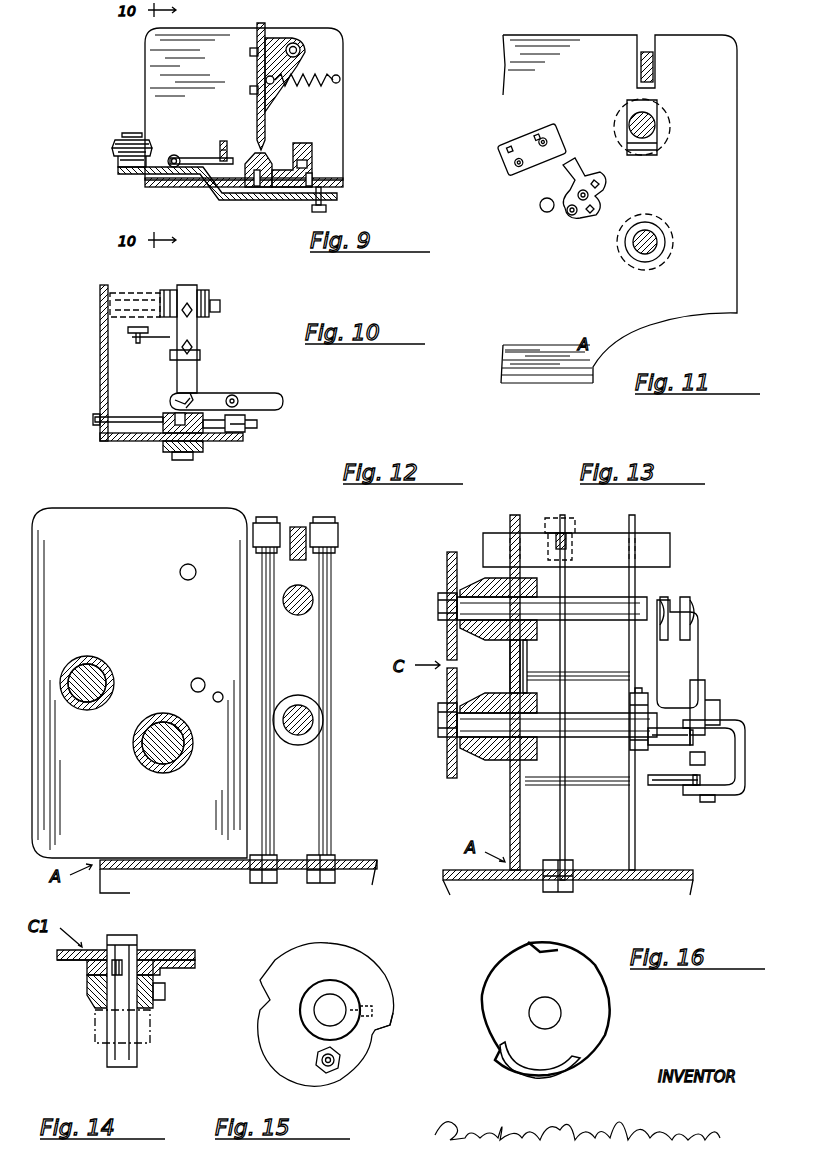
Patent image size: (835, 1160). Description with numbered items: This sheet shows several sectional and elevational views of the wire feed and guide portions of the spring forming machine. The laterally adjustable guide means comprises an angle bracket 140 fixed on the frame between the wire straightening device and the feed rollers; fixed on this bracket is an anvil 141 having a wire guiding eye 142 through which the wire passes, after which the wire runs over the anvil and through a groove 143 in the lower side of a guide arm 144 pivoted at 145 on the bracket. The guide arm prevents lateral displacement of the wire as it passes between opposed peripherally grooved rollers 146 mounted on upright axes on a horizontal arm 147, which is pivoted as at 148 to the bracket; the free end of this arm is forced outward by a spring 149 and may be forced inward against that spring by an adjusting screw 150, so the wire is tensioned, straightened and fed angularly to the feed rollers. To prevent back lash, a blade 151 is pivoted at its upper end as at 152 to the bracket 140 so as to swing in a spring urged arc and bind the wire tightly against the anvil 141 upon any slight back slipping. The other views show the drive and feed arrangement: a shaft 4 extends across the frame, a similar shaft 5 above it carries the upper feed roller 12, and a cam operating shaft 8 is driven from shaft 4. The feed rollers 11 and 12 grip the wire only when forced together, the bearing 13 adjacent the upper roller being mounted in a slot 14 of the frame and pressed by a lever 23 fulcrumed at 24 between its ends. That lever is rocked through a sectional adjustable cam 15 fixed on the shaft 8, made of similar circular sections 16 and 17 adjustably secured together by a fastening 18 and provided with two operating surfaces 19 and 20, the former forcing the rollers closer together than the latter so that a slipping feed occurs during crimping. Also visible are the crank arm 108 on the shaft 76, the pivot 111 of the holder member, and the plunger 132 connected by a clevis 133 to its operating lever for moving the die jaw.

In FIG. 11, the shaft 4 is at (633, 250).
In FIG. 12, the shaft 4 is at (297, 737).
In FIG. 13, the shaft 4 is at (610, 740).
In FIG. 11, the shaft 5 is at (630, 118).
In FIG. 12, the shaft 5 is at (298, 615).
In FIG. 13, the shaft 5 is at (650, 600).
In FIG. 14, the cam operating shaft 8 is at (107, 1050).
In FIG. 13, the feed roller 11 is at (447, 758).
In FIG. 13, the feed roller 12 is at (447, 576).
In FIG. 11, the bearing 13 is at (655, 102).
In FIG. 13, the bearing 13 is at (485, 585).
In FIG. 11, the slot 14 is at (665, 142).
In FIG. 13, the slot 14 is at (512, 645).
In FIG. 14, the sectional adjustable cam 15 is at (191, 958).
In FIG. 14, the circular section 16 is at (82, 975).
In FIG. 15, the circular section 16 is at (360, 975).
In FIG. 14, the circular section 17 is at (140, 950).
In FIG. 16, the circular section 17 is at (592, 1007).
In FIG. 15, the fastening 18 is at (338, 1068).
In FIG. 16, the fastening 18 is at (578, 1063).
In FIG. 15, the operating surface 19 is at (255, 1045).
In FIG. 16, the operating surface 19 is at (473, 973).
In FIG. 15, the operating surface 20 is at (401, 1049).
In FIG. 11, the lever 23 is at (641, 62).
In FIG. 12, the lever 23 is at (298, 527).
In FIG. 13, the lever 23 is at (660, 548).
In FIG. 12, the fulcrum 24 is at (338, 540).
In FIG. 13, the fulcrum 24 is at (578, 542).
In FIG. 12, the shaft 76 is at (85, 700).
In FIG. 13, the crank arm 108 is at (680, 648).
In FIG. 11, the pivot 111 is at (583, 161).
In FIG. 12, the plunger 132 is at (150, 765).
In FIG. 13, the plunger 132 is at (665, 785).
In FIG. 13, the clevis 133 is at (705, 796).
In FIG. 9, the angle bracket 140 is at (148, 76).
In FIG. 10, the angle bracket 140 is at (100, 315).
In FIG. 9, the anvil 141 is at (262, 160).
In FIG. 10, the anvil 141 is at (175, 420).
In FIG. 9, the wire guiding eye 142 is at (313, 152).
In FIG. 9, the groove 143 is at (220, 150).
In FIG. 10, the groove 143 is at (190, 398).
In FIG. 9, the guide arm 144 is at (223, 141).
In FIG. 10, the guide arm 144 is at (283, 401).
In FIG. 10, the pivot 145 is at (240, 395).
In FIG. 9, the peripherally grooved rollers 146 is at (122, 140).
In FIG. 9, the horizontal arm 147 is at (125, 175).
In FIG. 10, the horizontal arm 147 is at (168, 447).
In FIG. 9, the pivot 148 is at (327, 208).
In FIG. 10, the pivot 148 is at (194, 457).
In FIG. 9, the spring 149 is at (210, 158).
In FIG. 10, the spring 149 is at (135, 417).
In FIG. 10, the adjusting screw 150 is at (258, 424).
In FIG. 9, the blade 151 is at (257, 26).
In FIG. 10, the blade 151 is at (190, 285).
In FIG. 9, the pivot 152 is at (297, 48).
In FIG. 10, the pivot 152 is at (221, 305).